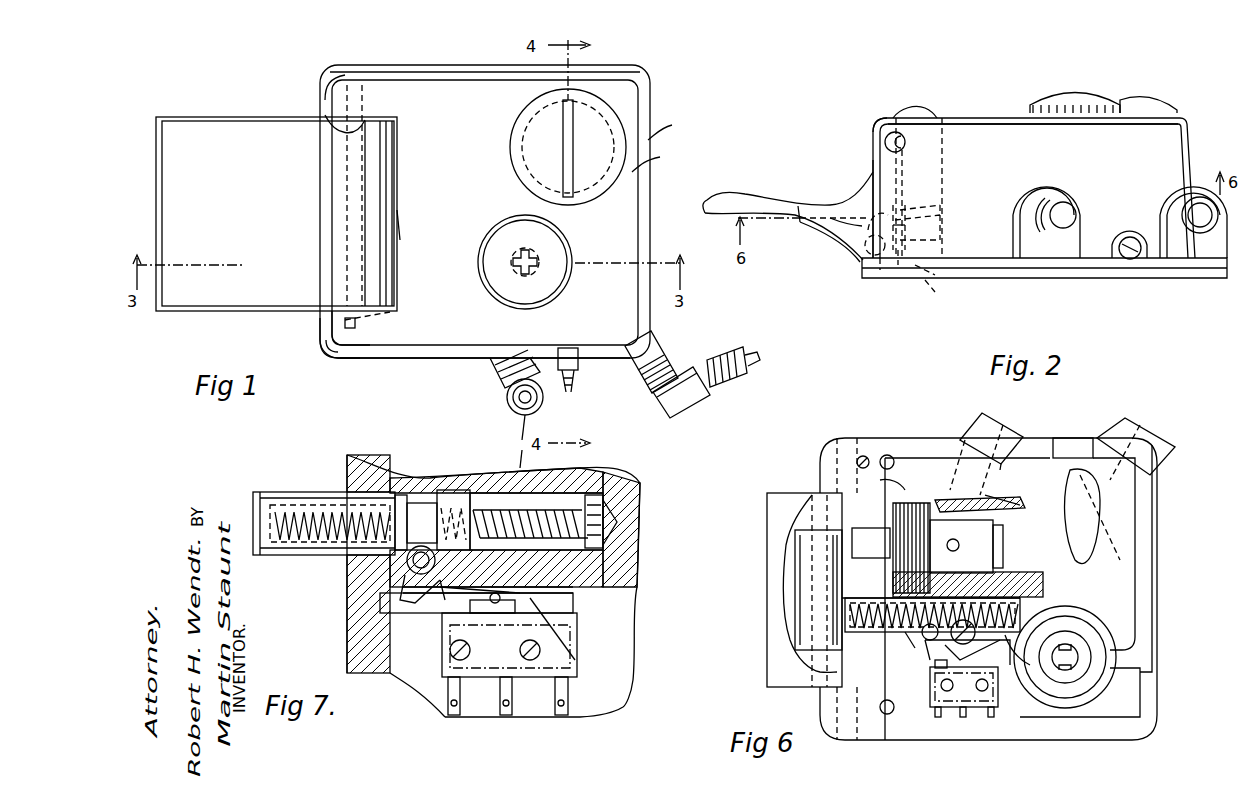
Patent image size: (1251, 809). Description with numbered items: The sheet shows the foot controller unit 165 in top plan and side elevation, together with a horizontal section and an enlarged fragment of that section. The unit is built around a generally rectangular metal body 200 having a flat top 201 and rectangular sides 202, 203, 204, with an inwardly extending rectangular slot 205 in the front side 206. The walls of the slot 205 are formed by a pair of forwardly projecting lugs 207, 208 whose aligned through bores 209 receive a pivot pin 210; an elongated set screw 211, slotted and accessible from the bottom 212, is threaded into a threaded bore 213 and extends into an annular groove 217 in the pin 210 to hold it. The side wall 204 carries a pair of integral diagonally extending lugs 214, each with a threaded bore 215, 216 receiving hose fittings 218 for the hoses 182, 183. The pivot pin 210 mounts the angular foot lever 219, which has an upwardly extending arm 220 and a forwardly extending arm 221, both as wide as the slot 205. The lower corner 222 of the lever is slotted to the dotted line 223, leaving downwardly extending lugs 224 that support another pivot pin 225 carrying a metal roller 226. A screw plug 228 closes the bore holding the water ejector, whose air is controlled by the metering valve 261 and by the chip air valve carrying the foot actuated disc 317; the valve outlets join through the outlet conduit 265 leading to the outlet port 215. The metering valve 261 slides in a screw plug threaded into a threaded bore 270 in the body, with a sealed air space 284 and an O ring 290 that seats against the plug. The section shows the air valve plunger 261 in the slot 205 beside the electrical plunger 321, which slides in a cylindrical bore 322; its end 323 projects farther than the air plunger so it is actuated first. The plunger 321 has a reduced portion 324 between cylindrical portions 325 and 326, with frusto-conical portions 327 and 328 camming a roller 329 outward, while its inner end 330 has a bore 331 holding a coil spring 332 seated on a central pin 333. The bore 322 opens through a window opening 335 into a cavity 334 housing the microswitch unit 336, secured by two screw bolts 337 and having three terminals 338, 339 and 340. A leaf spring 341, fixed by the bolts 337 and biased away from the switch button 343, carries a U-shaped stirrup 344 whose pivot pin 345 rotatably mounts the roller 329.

In FIG. 1, the foot controller unit 165 is at (495, 186).
In FIG. 2, the foot controller unit 165 is at (1102, 165).
In FIG. 1, the hose 182 is at (511, 433).
In FIG. 7, the hose 182 is at (513, 452).
In FIG. 1, the hose 183 is at (758, 368).
In FIG. 1, the metal body 200 is at (650, 215).
In FIG. 2, the metal body 200 is at (977, 102).
In FIG. 7, the metal body 200 is at (425, 462).
In FIG. 6, the metal body 200 is at (930, 438).
In FIG. 1, the flat top 201 is at (667, 158).
In FIG. 2, the flat top 201 is at (1000, 118).
In FIG. 1, the rectangular side 202 is at (478, 72).
In FIG. 1, the rectangular side 203 is at (677, 124).
In FIG. 1, the side wall 204 is at (440, 358).
In FIG. 2, the side wall 204 is at (1100, 258).
In FIG. 1, the rectangular slot 205 is at (335, 125).
In FIG. 6, the rectangular slot 205 is at (820, 480).
In FIG. 1, the front side 206 is at (332, 322).
In FIG. 2, the front side 206 is at (873, 175).
In FIG. 1, the forwardly projecting lug 207 is at (330, 80).
In FIG. 1, the forwardly projecting lug 208 is at (323, 340).
In FIG. 1, the aligned through bore 209 is at (338, 358).
In FIG. 2, the aligned through bore 209 is at (885, 140).
In FIG. 1, the pivot pin 210 is at (355, 330).
In FIG. 2, the pivot pin 210 is at (890, 148).
In FIG. 2, the elongated set screw 211 is at (898, 268).
In FIG. 2, the bottom 212 is at (935, 275).
In FIG. 2, the threaded bore 213 is at (933, 303).
In FIG. 1, the diagonally extending lug 214 is at (498, 380).
In FIG. 2, the diagonally extending lug 214 is at (1060, 235).
In FIG. 6, the diagonally extending lug 214 is at (980, 420).
In FIG. 1, the threaded bore 215 is at (508, 400).
In FIG. 2, the threaded bore 215 is at (1048, 225).
In FIG. 6, the threaded bore 215 is at (1010, 425).
In FIG. 1, the threaded bore 216 is at (640, 378).
In FIG. 2, the threaded bore 216 is at (1180, 215).
In FIG. 6, the threaded bore 216 is at (1150, 400).
In FIG. 1, the annular groove 217 is at (390, 312).
In FIG. 2, the annular groove 217 is at (922, 108).
In FIG. 1, the hose fitting 218 is at (700, 415).
In FIG. 1, the foot lever 219 is at (240, 164).
In FIG. 2, the foot lever 219 is at (775, 195).
In FIG. 2, the upwardly extending flange or arm 220 is at (873, 118).
In FIG. 1, the forwardly extending arm or flange 221 is at (397, 250).
In FIG. 2, the forwardly extending arm or flange 221 is at (798, 215).
In FIG. 2, the lower corner 222 is at (905, 245).
In FIG. 2, the dotted line 223 is at (940, 215).
In FIG. 2, the downwardly extending lug 224 is at (880, 270).
In FIG. 2, the pivot pin 225 is at (868, 245).
In FIG. 2, the metal roller 226 is at (844, 214).
In FIG. 1, the screw plug 228 is at (540, 110).
In FIG. 2, the screw plug 228 is at (1160, 85).
In FIG. 6, the metering valve 261 is at (875, 535).
In FIG. 6, the outlet conduit 265 is at (891, 577).
In FIG. 6, the threaded bore 270 is at (885, 479).
In FIG. 1, the air space 284 is at (570, 392).
In FIG. 2, the air space 284 is at (1130, 259).
In FIG. 6, the O ring 290 is at (1100, 535).
In FIG. 1, the foot actuated disc 317 is at (478, 262).
In FIG. 2, the foot actuated disc 317 is at (1103, 100).
In FIG. 7, the electrical plunger 321 is at (290, 555).
In FIG. 6, the electrical plunger 321 is at (870, 600).
In FIG. 7, the cylindrical bore 322 is at (330, 495).
In FIG. 6, the cylindrical bore 322 is at (893, 560).
In FIG. 7, the end of electrical plunger 323 is at (253, 520).
In FIG. 6, the end of electrical plunger 323 is at (845, 618).
In FIG. 7, the reduced portion 324 is at (440, 490).
In FIG. 6, the reduced portion 324 is at (1000, 572).
In FIG. 7, the cylindrical portion 325 is at (414, 601).
In FIG. 6, the cylindrical portion 325 is at (886, 652).
In FIG. 7, the cylindrical portion 326 is at (500, 493).
In FIG. 6, the cylindrical portion 326 is at (945, 645).
In FIG. 7, the frusto-conical portion 327 is at (420, 575).
In FIG. 6, the frusto-conical portion 327 is at (966, 538).
In FIG. 7, the frusto-conical portion 328 is at (476, 604).
In FIG. 6, the frusto-conical portion 328 is at (938, 667).
In FIG. 7, the roller 329 is at (416, 611).
In FIG. 6, the roller 329 is at (879, 640).
In FIG. 7, the inner end 330 is at (455, 575).
In FIG. 6, the inner end 330 is at (1040, 620).
In FIG. 7, the cylindrical bore 331 is at (520, 593).
In FIG. 6, the cylindrical bore 331 is at (1055, 630).
In FIG. 7, the coil spring 332 is at (610, 520).
In FIG. 6, the coil spring 332 is at (1068, 633).
In FIG. 7, the central pin 333 is at (603, 500).
In FIG. 6, the central pin 333 is at (1078, 650).
In FIG. 7, the cavity 334 is at (620, 655).
In FIG. 6, the cavity 334 is at (928, 720).
In FIG. 7, the window opening 335 is at (382, 520).
In FIG. 7, the microswitch unit 336 is at (442, 660).
In FIG. 6, the microswitch unit 336 is at (998, 700).
In FIG. 7, the screw bolt 337 is at (475, 650).
In FIG. 6, the screw bolt 337 is at (982, 691).
In FIG. 7, the electrical terminal 338 is at (448, 715).
In FIG. 6, the electrical terminal 338 is at (938, 717).
In FIG. 7, the electrical terminal 339 is at (506, 715).
In FIG. 6, the electrical terminal 339 is at (963, 717).
In FIG. 7, the electrical terminal 340 is at (561, 715).
In FIG. 6, the electrical terminal 340 is at (991, 717).
In FIG. 7, the leaf spring 341 is at (575, 660).
In FIG. 6, the leaf spring 341 is at (1027, 650).
In FIG. 7, the switch button 343 is at (490, 605).
In FIG. 6, the switch button 343 is at (935, 664).
In FIG. 7, the U-shaped stirrup 344 is at (347, 630).
In FIG. 6, the U-shaped stirrup 344 is at (964, 635).
In FIG. 7, the pivot pin 345 is at (350, 460).